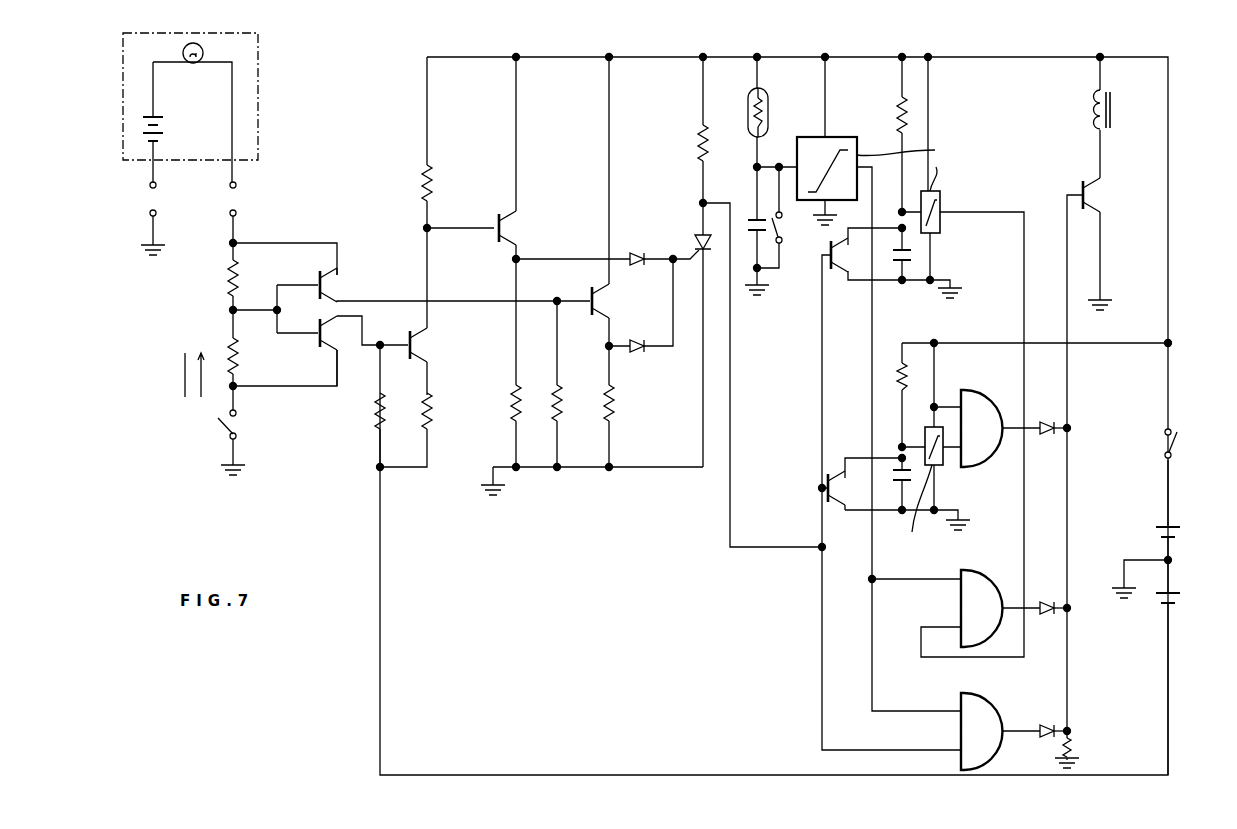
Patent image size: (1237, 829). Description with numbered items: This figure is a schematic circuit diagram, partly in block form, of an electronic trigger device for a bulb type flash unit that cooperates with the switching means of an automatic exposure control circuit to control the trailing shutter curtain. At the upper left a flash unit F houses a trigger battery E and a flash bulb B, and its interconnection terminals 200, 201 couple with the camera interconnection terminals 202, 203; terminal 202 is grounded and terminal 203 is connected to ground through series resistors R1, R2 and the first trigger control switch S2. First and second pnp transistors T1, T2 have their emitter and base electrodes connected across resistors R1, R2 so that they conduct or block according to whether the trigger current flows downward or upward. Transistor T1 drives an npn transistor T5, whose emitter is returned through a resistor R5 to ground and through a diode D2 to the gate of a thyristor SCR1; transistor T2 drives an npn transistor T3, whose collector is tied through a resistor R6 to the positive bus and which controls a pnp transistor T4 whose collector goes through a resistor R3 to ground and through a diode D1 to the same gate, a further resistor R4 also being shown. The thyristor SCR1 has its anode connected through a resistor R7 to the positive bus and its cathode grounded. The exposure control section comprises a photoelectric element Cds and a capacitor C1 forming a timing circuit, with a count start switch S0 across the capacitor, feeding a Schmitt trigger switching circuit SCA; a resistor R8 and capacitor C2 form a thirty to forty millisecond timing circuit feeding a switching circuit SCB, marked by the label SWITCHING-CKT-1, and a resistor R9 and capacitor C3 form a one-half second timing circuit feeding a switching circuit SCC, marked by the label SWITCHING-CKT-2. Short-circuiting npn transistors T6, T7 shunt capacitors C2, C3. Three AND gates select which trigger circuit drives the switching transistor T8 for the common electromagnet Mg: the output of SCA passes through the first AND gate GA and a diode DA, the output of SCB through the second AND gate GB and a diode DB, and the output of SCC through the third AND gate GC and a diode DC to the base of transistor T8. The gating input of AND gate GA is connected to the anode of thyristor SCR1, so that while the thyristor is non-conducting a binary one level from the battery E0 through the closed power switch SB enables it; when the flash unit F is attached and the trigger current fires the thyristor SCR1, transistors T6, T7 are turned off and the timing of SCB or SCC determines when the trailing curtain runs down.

The flash bulb B is at (199, 53).
The trigger power source or battery E is at (159, 130).
The flash unit F is at (258, 95).
The interconnection terminal 200 is at (157, 185).
The interconnection terminal 201 is at (237, 185).
The interconnection terminal 202 is at (157, 213).
The interconnection terminal 203 is at (237, 213).
The resistor R1 is at (243, 278).
The resistor R2 is at (243, 356).
The first trigger control switch S2 is at (238, 442).
The first pnp transistor T1 is at (455, 286).
The second pnp transistor T2 is at (364, 351).
The npn transistor T3 is at (422, 311).
The resistor R6 is at (437, 142).
The pnp transistor T4 is at (510, 158).
The resistor R3 is at (504, 403).
The resistor R4 is at (547, 403).
The resistor R5 is at (598, 403).
The npn transistor T5 is at (603, 262).
The diode D1 is at (637, 250).
The diode D2 is at (639, 358).
The resistor R7 is at (693, 130).
The thyristor SCR1 is at (685, 335).
The photoelectric element Cds is at (768, 112).
The capacitor C1 is at (749, 228).
The count start switch S0 is at (788, 227).
The switching circuit SCA is at (834, 147).
The switching circuit SWITCHING-CKT-1 is at (1001, 169).
The resistor R8 is at (892, 134).
The switching circuit SCB is at (940, 203).
The capacitor C2 is at (894, 255).
The short-circuiting npn transistor T6 is at (891, 494).
The electromagnet Mg is at (1117, 117).
The switching transistor T8 is at (1089, 454).
The resistor R9 is at (912, 376).
The switching circuit SCC is at (935, 427).
The switching circuit SWITCHING-CKT-2 is at (966, 509).
The capacitor C3 is at (894, 475).
The short-circuiting npn transistor T7 is at (838, 490).
The third AND gate GC is at (996, 462).
The diode DC is at (1052, 418).
The second AND gate GB is at (996, 642).
The diode DB is at (1052, 598).
The first AND gate GA is at (996, 765).
The diode DA is at (1052, 721).
The power switch SB is at (1181, 443).
The power supply source or battery E0 is at (1186, 513).